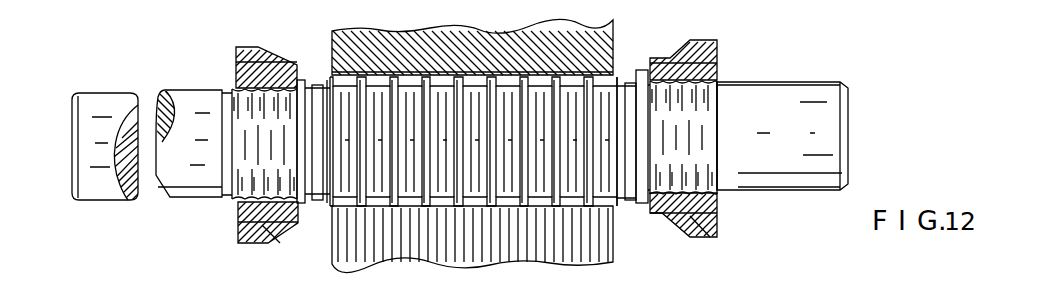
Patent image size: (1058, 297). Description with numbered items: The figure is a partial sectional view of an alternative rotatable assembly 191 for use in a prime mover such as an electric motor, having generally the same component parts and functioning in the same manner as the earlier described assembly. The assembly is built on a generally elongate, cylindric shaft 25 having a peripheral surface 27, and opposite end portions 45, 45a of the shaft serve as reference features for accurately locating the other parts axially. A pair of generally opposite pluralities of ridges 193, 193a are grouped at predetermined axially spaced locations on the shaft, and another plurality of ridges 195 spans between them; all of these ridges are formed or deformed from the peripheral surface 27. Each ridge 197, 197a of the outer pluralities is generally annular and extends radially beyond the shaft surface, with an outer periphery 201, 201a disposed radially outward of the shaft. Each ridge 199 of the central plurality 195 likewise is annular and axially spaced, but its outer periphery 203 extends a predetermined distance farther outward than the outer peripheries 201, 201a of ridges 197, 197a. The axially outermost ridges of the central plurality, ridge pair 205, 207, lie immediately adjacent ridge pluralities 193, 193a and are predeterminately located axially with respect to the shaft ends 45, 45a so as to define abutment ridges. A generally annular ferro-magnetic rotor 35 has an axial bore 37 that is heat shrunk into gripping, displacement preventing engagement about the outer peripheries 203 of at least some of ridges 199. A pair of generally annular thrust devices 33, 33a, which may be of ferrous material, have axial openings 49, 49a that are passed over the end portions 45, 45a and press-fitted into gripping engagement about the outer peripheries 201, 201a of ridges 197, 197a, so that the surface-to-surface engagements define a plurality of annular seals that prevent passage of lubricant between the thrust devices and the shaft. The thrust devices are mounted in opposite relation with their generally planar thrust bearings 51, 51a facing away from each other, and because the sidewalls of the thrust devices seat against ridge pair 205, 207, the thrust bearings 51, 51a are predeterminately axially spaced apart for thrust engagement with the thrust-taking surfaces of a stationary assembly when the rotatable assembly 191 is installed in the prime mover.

The shaft 25 is at (833, 125).
The peripheral surface 27 is at (822, 190).
The thrust device 33 is at (255, 50).
The thrust device 33a is at (702, 42).
The rotor 35 is at (462, 30).
The bore 37 is at (537, 68).
The end portion 45 is at (96, 100).
The end portion 45a is at (836, 82).
The opening 49 is at (250, 82).
The opening 49a is at (720, 68).
The thrust bearing 51 is at (241, 235).
The thrust bearing 51a is at (721, 228).
The rotatable assembly 191 is at (810, 37).
The plurality of ridges 193 is at (215, 189).
The plurality of ridges 193a is at (722, 183).
The plurality of ridges 195 is at (431, 221).
The ridge 197 is at (238, 93).
The ridge 197a is at (712, 90).
The ridge 199 is at (460, 195).
The outer periphery 201 is at (236, 217).
The lock nut 201a is at (718, 210).
The outer periphery 203 is at (526, 204).
The abutment ridge 205 is at (303, 77).
The abutment ridge 207 is at (646, 80).